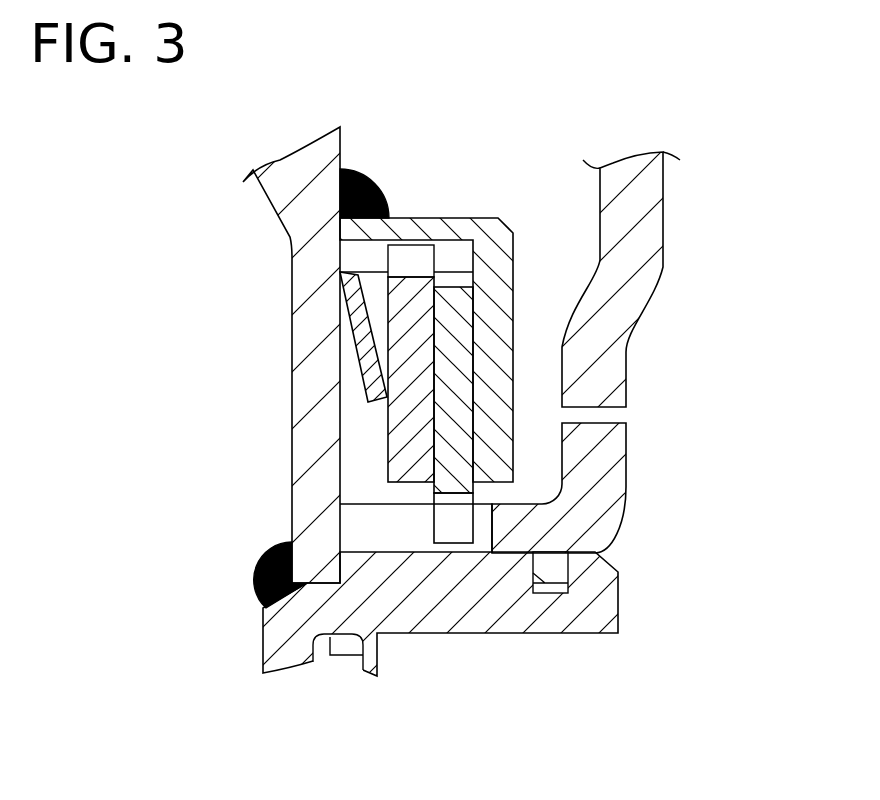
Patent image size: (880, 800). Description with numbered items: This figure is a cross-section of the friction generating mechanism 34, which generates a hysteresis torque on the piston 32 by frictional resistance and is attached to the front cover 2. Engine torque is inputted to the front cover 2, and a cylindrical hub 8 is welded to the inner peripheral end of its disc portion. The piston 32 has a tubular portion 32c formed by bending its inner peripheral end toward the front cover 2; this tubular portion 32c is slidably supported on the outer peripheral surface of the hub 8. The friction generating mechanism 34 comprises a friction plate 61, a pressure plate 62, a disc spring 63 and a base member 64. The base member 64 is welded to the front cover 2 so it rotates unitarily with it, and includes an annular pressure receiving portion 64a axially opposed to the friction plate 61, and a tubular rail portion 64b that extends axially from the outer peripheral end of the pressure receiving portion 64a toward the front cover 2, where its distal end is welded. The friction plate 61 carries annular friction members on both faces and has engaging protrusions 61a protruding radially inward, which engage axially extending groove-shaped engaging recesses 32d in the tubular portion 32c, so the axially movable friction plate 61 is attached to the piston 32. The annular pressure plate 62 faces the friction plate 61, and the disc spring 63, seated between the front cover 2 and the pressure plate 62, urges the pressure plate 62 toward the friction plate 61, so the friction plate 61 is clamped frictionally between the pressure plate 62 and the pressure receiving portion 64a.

The front cover 2 is at (292, 258).
The hub 8 is at (283, 632).
The piston 32 is at (563, 454).
The tubular portion 32c is at (512, 540).
The engaging recess 32d is at (500, 513).
The friction generating mechanism 34 is at (472, 416).
The friction plate 61 is at (512, 532).
The engaging protrusion 61a is at (442, 525).
The pressure plate 62 is at (407, 455).
The disc spring 63 is at (363, 337).
The base member 64 is at (542, 268).
The pressure receiving portion 64a is at (500, 320).
The rail portion 64b is at (404, 218).